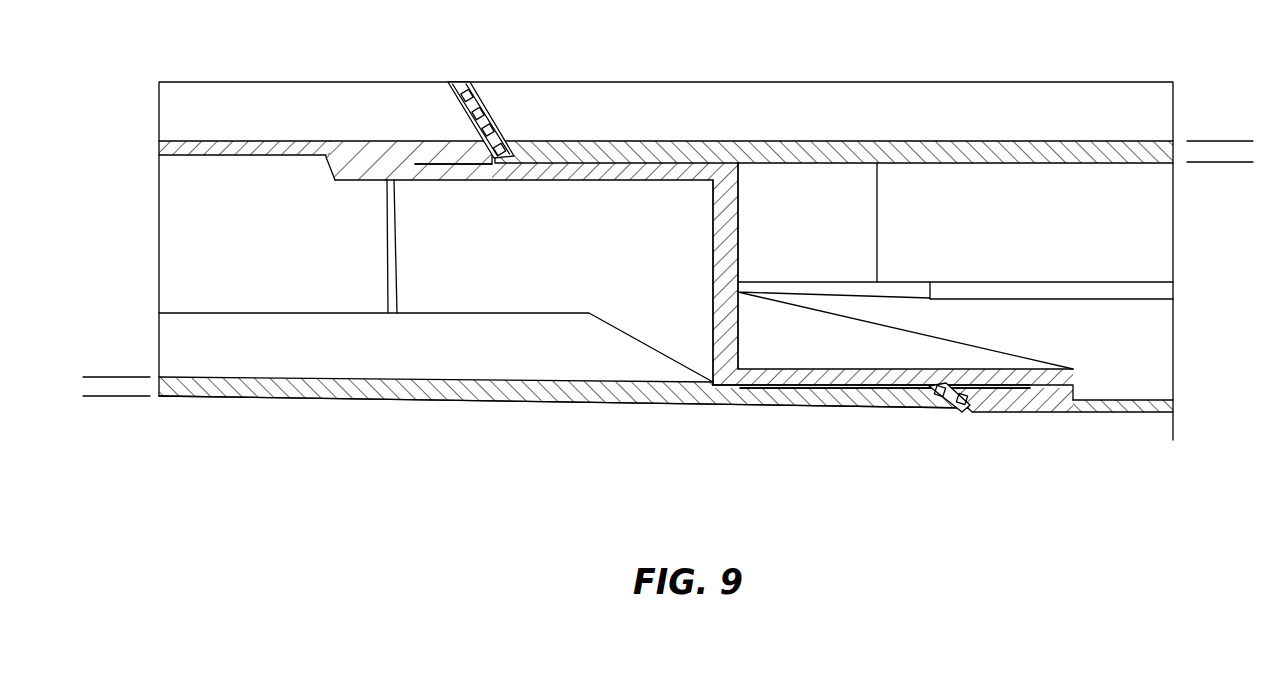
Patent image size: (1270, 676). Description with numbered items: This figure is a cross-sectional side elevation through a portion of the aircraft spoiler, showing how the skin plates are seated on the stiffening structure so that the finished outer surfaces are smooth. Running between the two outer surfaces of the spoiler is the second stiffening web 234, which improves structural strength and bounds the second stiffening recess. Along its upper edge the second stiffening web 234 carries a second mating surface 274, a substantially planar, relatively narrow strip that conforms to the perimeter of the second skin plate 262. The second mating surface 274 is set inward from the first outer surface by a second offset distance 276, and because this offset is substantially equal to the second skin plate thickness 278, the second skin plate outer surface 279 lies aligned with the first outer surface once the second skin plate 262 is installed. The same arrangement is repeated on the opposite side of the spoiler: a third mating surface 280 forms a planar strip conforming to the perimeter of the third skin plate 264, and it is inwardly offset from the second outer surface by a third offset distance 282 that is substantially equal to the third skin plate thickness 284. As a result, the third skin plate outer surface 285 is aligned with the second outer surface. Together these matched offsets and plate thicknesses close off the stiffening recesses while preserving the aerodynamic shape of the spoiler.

The second skin plate 262 is at (826, 94).
The second skin plate outer surface 279 is at (955, 103).
The second mating surface 274 is at (599, 163).
The second offset distance 276 is at (437, 189).
The second skin plate thickness 278 is at (1218, 171).
The second stiffening web 234 is at (710, 297).
The third skin plate 264 is at (409, 409).
The third skin plate outer surface 285 is at (521, 405).
The third mating surface 280 is at (882, 390).
The third offset distance 282 is at (1007, 376).
The third skin plate thickness 284 is at (117, 335).